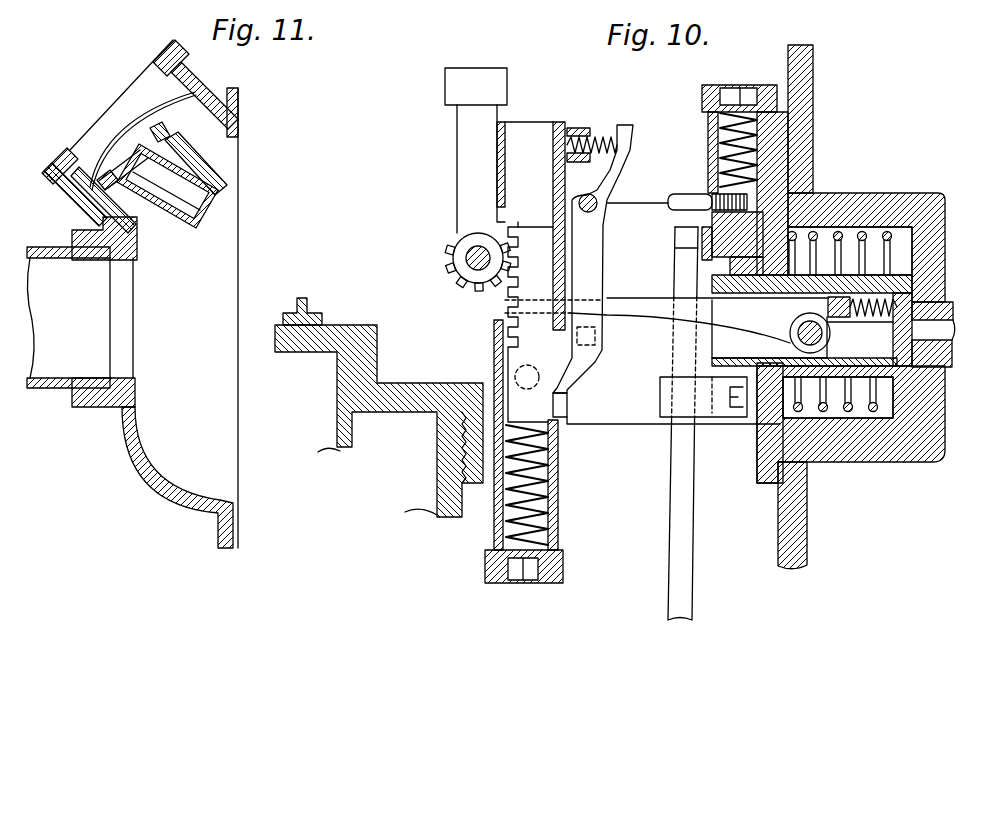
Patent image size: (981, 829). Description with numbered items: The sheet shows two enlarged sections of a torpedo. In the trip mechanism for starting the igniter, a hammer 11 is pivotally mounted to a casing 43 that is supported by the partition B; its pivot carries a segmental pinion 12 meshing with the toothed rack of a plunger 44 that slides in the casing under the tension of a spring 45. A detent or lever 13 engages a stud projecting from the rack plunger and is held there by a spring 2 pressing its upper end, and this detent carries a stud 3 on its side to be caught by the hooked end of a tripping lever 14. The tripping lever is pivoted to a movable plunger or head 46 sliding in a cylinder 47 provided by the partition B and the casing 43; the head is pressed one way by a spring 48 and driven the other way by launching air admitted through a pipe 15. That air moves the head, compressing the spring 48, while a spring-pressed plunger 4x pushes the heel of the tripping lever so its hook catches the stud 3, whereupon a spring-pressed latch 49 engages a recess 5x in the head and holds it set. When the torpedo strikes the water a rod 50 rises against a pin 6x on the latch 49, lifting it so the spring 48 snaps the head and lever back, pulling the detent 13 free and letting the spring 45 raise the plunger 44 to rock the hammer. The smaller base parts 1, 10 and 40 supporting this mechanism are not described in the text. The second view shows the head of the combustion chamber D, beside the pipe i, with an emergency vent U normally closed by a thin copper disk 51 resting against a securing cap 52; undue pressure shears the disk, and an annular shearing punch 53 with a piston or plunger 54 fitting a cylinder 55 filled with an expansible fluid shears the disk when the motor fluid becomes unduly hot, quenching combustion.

In FIG. 10, the stud 1 is at (308, 304).
In FIG. 10, the spring 2 is at (607, 140).
In FIG. 10, the stud 3 is at (596, 334).
In FIG. 10, the base plate 10 is at (337, 423).
In FIG. 10, the hammer 11 is at (450, 85).
In FIG. 10, the segmental pinion 12 is at (455, 290).
In FIG. 10, the detent or lever 13 is at (573, 263).
In FIG. 10, the tripping lever 14 is at (732, 361).
In FIG. 10, the pipe 15 is at (938, 297).
In FIG. 10, the bracket block 40 is at (435, 447).
In FIG. 10, the casing 43 is at (758, 462).
In FIG. 10, the plunger 44 is at (552, 322).
In FIG. 10, the spring 45 is at (553, 515).
In FIG. 10, the movable plunger or head 46 is at (900, 430).
In FIG. 10, the cylinder 47 is at (838, 432).
In FIG. 10, the spring 48 is at (875, 392).
In FIG. 10, the spring-pressed latch 49 is at (730, 260).
In FIG. 10, the rod 50 is at (673, 545).
In FIG. 11, the thin copper disk 51 is at (163, 108).
In FIG. 11, the securing cap 52 is at (68, 153).
In FIG. 11, the annular shearing punch 53 is at (122, 176).
In FIG. 11, the piston or plunger 54 is at (187, 196).
In FIG. 11, the cylinder 55 is at (177, 145).
In FIG. 10, the spring-pressed plunger 4x is at (840, 313).
In FIG. 10, the recess 5x is at (766, 292).
In FIG. 10, the pin 6x is at (690, 192).
In FIG. 10, the partition B is at (804, 520).
In FIG. 11, the combustion chamber D is at (180, 318).
In FIG. 11, the emergency vent U is at (115, 112).
In FIG. 11, the pipe i is at (82, 312).